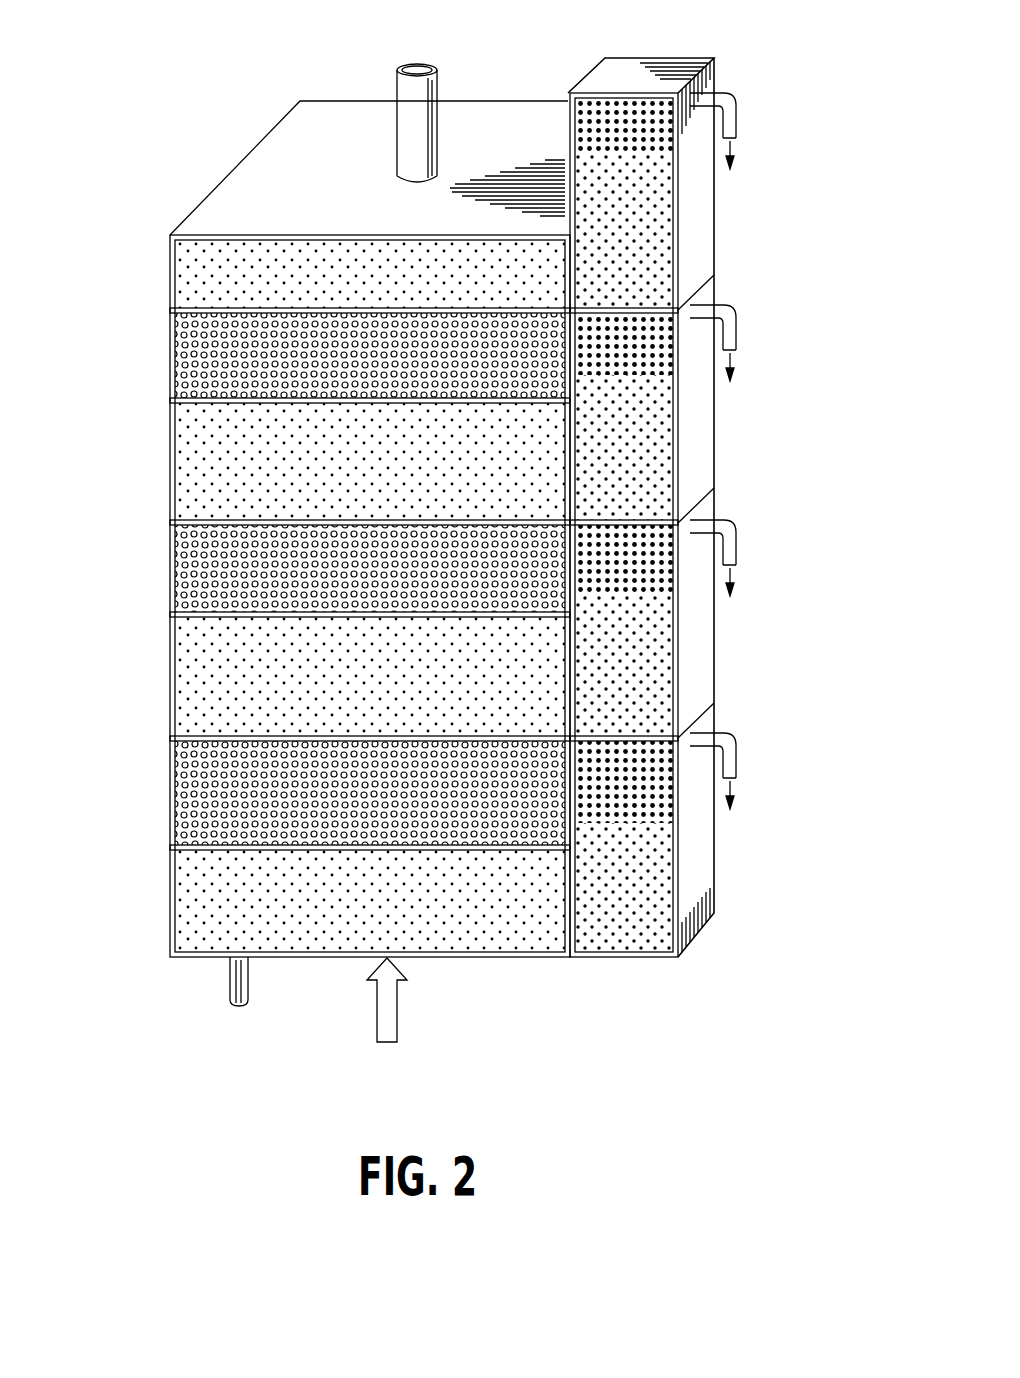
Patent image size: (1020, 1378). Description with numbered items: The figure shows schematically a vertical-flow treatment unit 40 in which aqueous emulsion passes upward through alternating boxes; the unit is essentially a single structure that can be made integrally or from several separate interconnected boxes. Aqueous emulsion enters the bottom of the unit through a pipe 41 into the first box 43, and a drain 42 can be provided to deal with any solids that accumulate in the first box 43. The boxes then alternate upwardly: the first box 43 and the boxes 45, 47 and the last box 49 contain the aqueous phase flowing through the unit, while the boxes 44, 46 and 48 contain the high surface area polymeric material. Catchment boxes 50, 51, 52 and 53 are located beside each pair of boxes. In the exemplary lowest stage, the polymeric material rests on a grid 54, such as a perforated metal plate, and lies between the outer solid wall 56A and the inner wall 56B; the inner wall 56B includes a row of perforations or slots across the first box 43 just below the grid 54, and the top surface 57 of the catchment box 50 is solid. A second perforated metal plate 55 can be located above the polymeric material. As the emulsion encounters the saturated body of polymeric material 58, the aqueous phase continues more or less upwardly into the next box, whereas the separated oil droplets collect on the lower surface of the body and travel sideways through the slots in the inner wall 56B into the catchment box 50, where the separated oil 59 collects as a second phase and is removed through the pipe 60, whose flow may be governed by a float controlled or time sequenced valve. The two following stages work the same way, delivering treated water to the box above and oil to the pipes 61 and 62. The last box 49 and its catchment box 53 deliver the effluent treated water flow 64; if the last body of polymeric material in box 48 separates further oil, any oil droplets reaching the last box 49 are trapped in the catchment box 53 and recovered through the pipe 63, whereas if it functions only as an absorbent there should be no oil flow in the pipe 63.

The treatment unit 40 is at (787, 595).
The pipe 41 is at (400, 1012).
The drain 42 is at (228, 990).
The first box 43 is at (170, 930).
The box 44 is at (170, 790).
The box 45 is at (170, 667).
The box 46 is at (170, 570).
The box 47 is at (170, 468).
The box 48 is at (170, 355).
The last box 49 is at (170, 276).
The catchment box 50 is at (700, 912).
The catchment box 51 is at (700, 635).
The catchment box 52 is at (703, 412).
The catchment box 53 is at (703, 205).
The grid 54 is at (505, 853).
The second perforated metal plate 55 is at (312, 737).
The outer solid wall 56A is at (170, 886).
The inner wall 56B is at (566, 888).
The top surface 57 is at (618, 738).
The body of polymeric material 58 is at (243, 767).
The separated oil 59 is at (640, 790).
The pipe 60 is at (740, 757).
The pipe 61 is at (740, 545).
The pipe 62 is at (740, 330).
The pipe 63 is at (745, 118).
The effluent treated water flow 64 is at (405, 90).